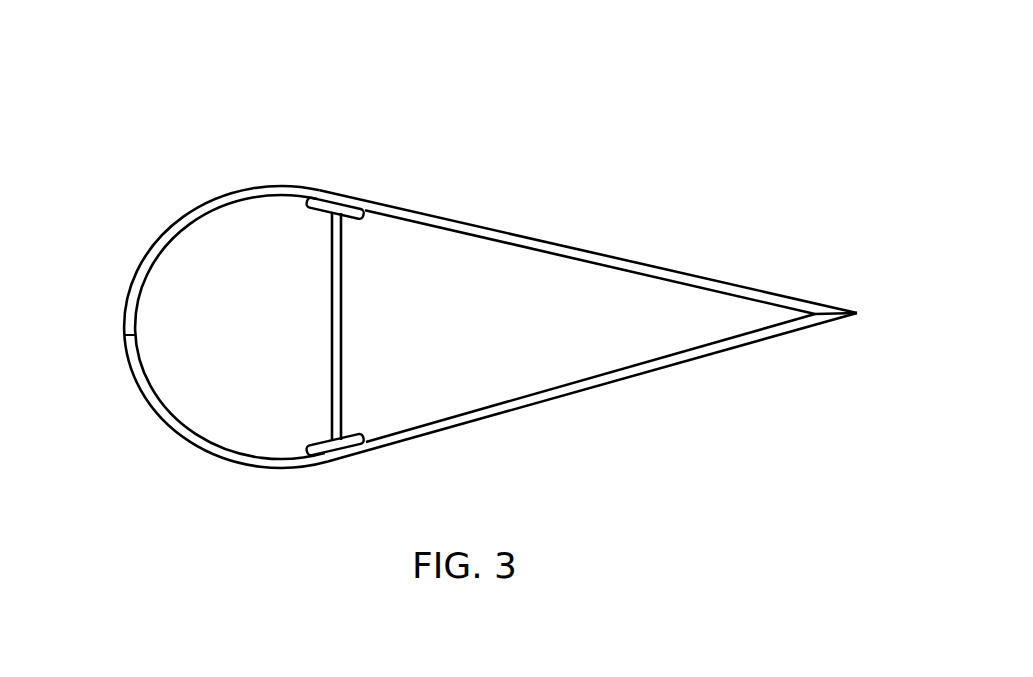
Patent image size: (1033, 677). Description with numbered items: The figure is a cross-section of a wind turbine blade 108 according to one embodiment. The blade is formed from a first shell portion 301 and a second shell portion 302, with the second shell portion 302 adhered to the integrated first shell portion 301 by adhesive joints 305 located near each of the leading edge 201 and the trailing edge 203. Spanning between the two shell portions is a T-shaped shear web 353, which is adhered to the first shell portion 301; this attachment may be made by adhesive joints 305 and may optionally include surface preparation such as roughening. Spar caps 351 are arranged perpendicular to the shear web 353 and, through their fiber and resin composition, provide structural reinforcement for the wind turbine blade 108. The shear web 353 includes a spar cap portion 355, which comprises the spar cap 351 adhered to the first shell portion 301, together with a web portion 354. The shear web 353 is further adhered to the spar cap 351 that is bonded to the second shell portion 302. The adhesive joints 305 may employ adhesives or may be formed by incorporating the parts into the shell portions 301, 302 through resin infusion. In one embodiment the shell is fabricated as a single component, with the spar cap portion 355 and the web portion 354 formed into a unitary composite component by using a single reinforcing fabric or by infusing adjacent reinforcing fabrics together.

The wind turbine blade 108 is at (204, 96).
The leading edge 201 is at (146, 229).
The trailing edge 203 is at (822, 338).
The first shell portion 301 is at (567, 397).
The second shell portion 302 is at (590, 250).
The adhesive joint 305 is at (127, 332).
The spar cap 351 is at (313, 200).
The shear web 353 is at (342, 335).
The web portion 354 is at (323, 313).
The spar cap portion 355 is at (351, 430).